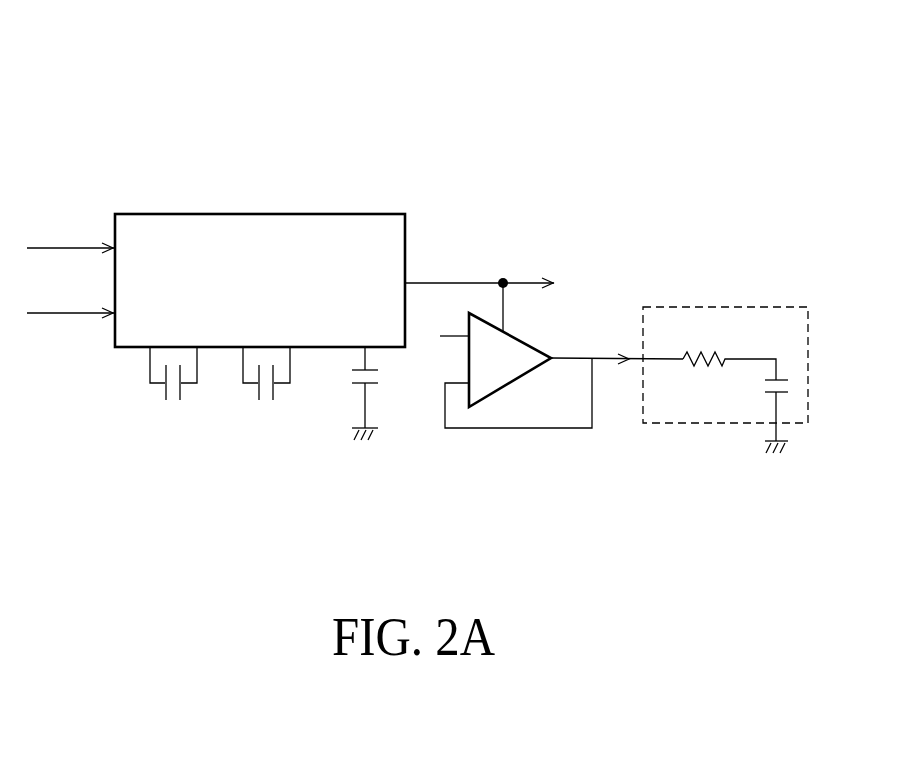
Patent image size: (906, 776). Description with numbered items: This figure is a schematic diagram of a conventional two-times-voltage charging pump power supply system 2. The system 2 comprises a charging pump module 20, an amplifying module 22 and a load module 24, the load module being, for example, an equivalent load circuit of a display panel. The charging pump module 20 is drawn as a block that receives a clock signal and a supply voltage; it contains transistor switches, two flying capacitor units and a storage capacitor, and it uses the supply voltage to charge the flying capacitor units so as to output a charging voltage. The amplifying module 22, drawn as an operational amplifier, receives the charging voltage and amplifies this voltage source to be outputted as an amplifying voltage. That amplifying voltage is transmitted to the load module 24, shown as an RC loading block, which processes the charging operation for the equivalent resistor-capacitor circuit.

The two-times-voltage charging pump power supply system 2 is at (161, 62).
The charging pump module 20 is at (262, 213).
The amplifying module 22 is at (546, 336).
The load module 24 is at (712, 425).